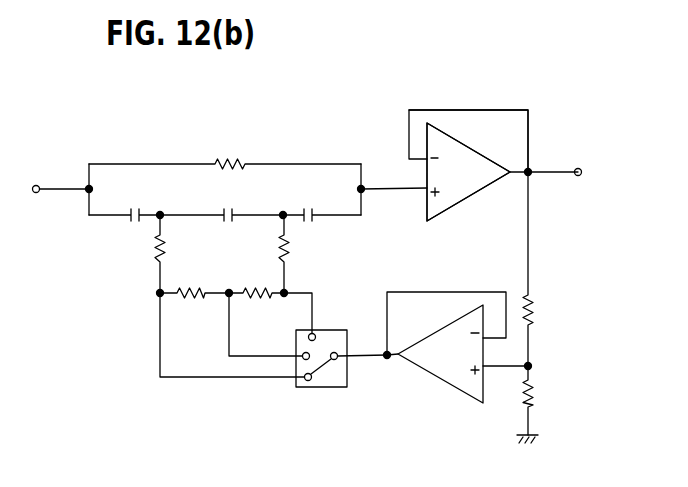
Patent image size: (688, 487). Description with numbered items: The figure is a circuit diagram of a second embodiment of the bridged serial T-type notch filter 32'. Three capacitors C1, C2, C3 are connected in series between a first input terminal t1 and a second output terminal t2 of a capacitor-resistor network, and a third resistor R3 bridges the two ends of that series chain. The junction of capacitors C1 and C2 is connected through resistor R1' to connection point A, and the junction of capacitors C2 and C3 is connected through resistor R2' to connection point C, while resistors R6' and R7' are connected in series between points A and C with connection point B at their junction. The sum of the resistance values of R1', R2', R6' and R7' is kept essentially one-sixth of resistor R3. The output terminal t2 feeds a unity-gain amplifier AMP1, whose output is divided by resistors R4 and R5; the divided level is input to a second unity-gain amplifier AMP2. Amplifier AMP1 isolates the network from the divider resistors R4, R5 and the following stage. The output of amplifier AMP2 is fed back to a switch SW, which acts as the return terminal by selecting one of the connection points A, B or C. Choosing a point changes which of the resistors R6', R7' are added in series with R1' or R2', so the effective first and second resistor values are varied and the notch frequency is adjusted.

The notch filter 32' is at (500, 145).
The first (input) terminal t1 is at (61, 173).
The second (output) terminal t2 is at (394, 173).
The third resistor R3 is at (225, 152).
The capacitor C1 is at (124, 202).
The capacitor C2 is at (221, 204).
The capacitor C3 is at (322, 204).
The resistor R1' is at (173, 254).
The resistor R2' is at (298, 254).
The resistor R6' is at (194, 283).
The resistor R7' is at (256, 283).
The divider resistor R4 is at (541, 269).
The divider resistor R5 is at (541, 400).
The connection point A is at (151, 283).
The connection point B is at (225, 306).
The connection point C is at (291, 283).
The switch SW is at (323, 388).
The amplifier AMP1 is at (495, 165).
The second amplifier AMP2 is at (456, 347).